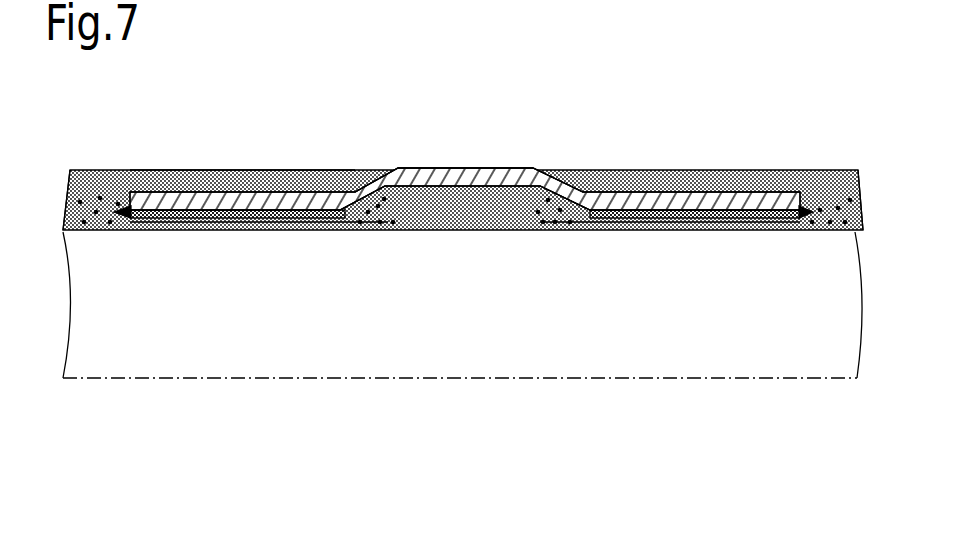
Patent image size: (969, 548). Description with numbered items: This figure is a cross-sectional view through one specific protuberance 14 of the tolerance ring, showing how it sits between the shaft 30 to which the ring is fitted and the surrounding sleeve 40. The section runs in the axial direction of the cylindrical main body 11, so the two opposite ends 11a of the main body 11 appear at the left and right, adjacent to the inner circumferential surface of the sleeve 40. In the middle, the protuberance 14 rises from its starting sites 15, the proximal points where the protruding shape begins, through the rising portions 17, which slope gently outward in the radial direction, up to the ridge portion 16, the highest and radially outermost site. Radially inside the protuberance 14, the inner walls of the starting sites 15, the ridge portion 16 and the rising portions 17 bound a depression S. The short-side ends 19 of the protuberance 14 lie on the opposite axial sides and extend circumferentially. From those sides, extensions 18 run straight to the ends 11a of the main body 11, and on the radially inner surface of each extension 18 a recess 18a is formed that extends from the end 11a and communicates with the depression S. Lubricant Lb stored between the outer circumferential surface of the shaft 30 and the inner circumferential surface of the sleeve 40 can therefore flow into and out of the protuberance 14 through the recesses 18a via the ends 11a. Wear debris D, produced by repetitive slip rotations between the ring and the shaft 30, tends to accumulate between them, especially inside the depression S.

The protuberance 14 is at (520, 104).
The main body 11 is at (477, 142).
The ends of the main body 11a is at (117, 197).
The sleeve 40 is at (842, 169).
The lubricant Lb is at (142, 178).
The ridge portion 16 is at (474, 168).
The rising portion 17 is at (360, 168).
The extension 18 is at (215, 232).
The recess 18a is at (133, 232).
The short-side end 19 is at (318, 232).
The starting site 15 is at (465, 252).
The shaft 30 is at (821, 232).
The depression S is at (474, 212).
The wear debris D is at (95, 200).